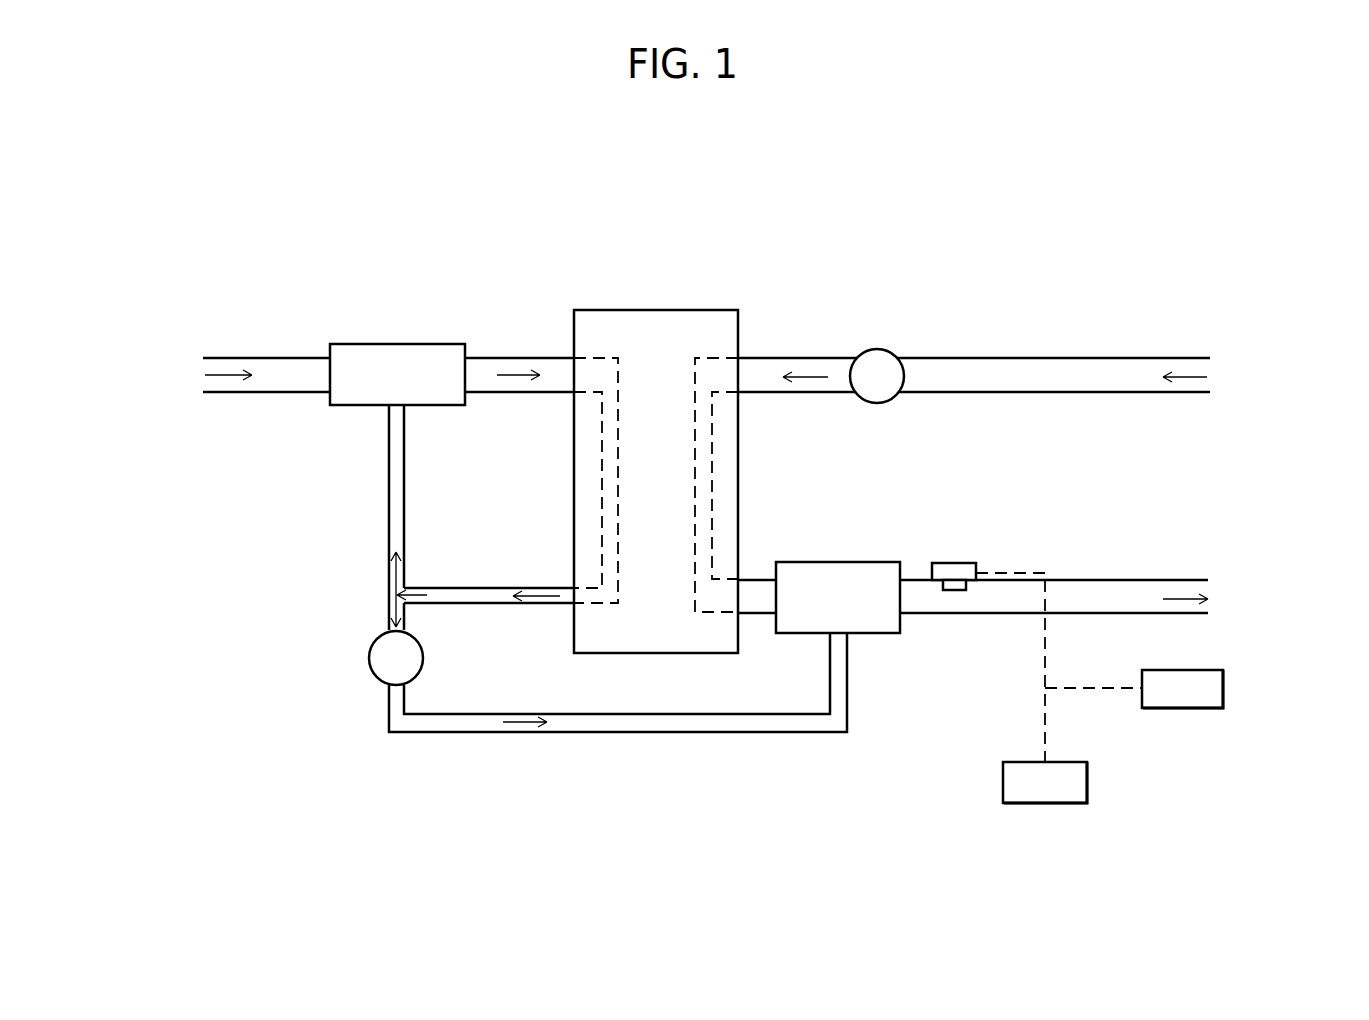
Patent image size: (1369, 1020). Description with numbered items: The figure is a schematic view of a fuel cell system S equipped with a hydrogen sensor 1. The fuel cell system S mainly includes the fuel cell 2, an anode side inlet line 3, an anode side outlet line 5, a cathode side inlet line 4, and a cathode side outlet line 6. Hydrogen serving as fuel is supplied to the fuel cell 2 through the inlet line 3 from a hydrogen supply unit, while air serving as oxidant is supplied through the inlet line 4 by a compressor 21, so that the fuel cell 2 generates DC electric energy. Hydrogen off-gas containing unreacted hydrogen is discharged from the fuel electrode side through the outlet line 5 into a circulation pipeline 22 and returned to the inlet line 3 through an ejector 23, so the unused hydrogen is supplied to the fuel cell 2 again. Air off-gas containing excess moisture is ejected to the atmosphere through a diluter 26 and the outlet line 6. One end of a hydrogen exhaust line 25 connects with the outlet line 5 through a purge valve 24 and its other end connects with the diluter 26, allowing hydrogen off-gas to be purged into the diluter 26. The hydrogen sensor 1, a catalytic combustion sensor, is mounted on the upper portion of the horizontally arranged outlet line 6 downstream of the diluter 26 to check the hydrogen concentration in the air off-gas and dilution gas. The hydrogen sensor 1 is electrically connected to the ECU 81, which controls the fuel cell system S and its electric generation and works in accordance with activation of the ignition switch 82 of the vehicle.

The fuel cell system S is at (992, 228).
The hydrogen sensor 1 is at (962, 560).
The fuel cell 2 is at (645, 310).
The anode side inlet line 3 is at (505, 358).
The cathode side inlet line 4 is at (787, 358).
The anode side outlet line 5 is at (468, 588).
The cathode side outlet line 6 is at (980, 615).
The compressor 21 is at (892, 355).
The circulation pipeline 22 is at (405, 465).
The ejector 23 is at (410, 344).
The purge valve 24 is at (423, 658).
The hydrogen exhaust line 25 is at (638, 732).
The diluter 26 is at (842, 562).
The ECU 81 is at (1087, 782).
The ignition switch 82 is at (1200, 708).